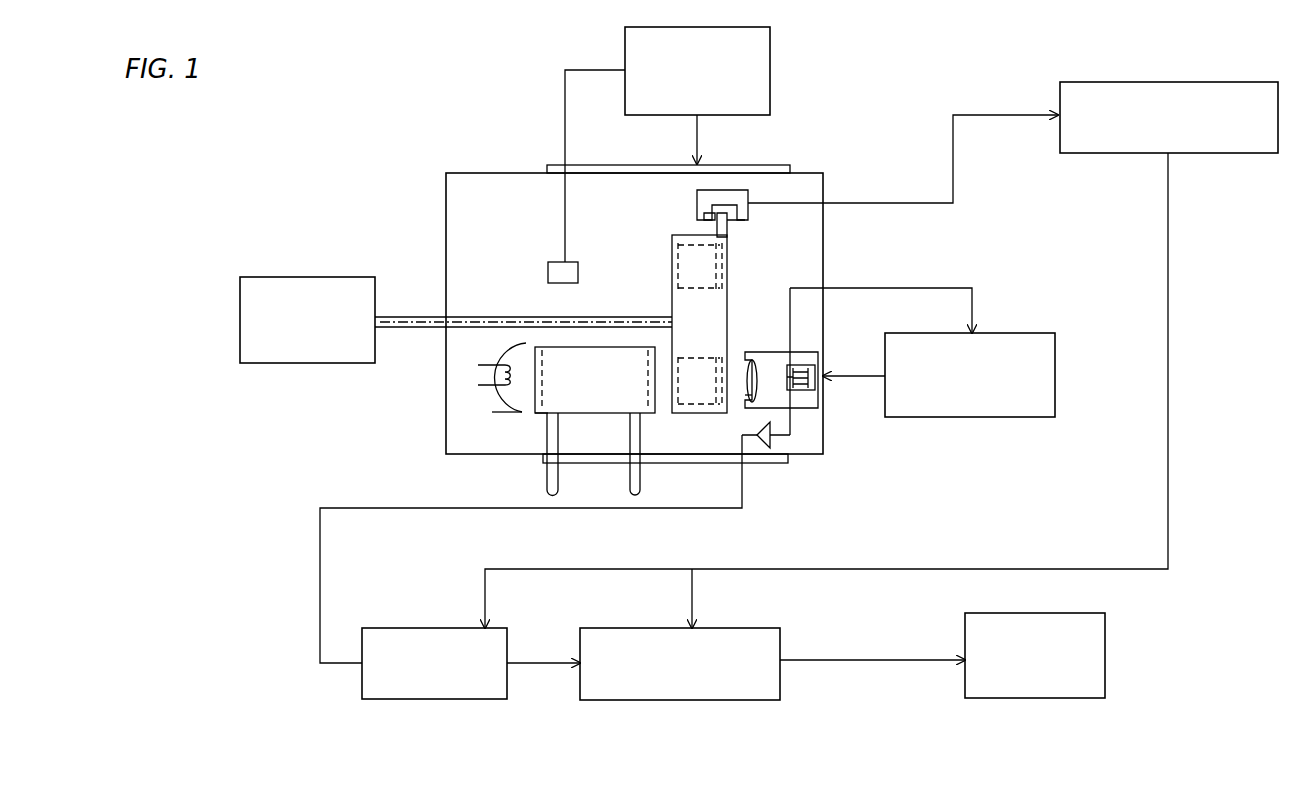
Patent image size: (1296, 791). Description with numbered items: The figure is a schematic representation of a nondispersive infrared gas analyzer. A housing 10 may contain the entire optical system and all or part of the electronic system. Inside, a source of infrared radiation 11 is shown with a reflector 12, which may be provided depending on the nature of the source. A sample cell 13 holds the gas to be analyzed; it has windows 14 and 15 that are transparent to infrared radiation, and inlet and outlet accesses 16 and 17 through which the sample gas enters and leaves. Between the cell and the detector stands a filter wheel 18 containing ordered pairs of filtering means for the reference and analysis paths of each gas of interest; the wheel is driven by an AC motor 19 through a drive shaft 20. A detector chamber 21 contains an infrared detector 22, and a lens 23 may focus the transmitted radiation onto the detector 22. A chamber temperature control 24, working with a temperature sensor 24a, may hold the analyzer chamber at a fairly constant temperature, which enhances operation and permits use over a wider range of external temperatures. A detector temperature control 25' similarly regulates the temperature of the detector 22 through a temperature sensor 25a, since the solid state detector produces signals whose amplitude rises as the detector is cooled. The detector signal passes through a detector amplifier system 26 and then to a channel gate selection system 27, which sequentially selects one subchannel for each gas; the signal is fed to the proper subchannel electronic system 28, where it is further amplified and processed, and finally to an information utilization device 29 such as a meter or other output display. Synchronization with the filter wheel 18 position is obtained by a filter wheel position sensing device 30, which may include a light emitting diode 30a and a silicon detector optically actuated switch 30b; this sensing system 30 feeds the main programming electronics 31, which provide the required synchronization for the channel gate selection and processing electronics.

The housing 10 is at (446, 193).
The source of infrared radiation 11 is at (480, 386).
The reflector 12 is at (505, 412).
The sample cell 13 is at (543, 416).
The window 14 is at (652, 347).
The window 15 is at (533, 345).
The inlet access 16 is at (558, 470).
The outlet access 17 is at (640, 470).
The filter wheel 18 is at (672, 264).
The AC motor 19 is at (323, 278).
The drive shaft 20 is at (410, 317).
The detector chamber 21 is at (753, 354).
The infrared detector 22 is at (790, 390).
The lens 23 is at (747, 394).
The chamber temperature control 24 is at (768, 36).
The temperature sensor 24a is at (550, 275).
The temperature sensor 25a is at (785, 368).
The detector temperature control 25' is at (939, 362).
The detector amplifier system 26 is at (772, 442).
The channel gate selection system 27 is at (394, 630).
The subchannel electronic system 28 is at (722, 630).
The information utilization device 29 is at (1038, 614).
The filter wheel position sensing device 30 is at (697, 200).
The light emitting diode 30a is at (700, 217).
The silicon detector optically actuated switch 30b is at (735, 222).
The main programming electronics 31 is at (1226, 153).